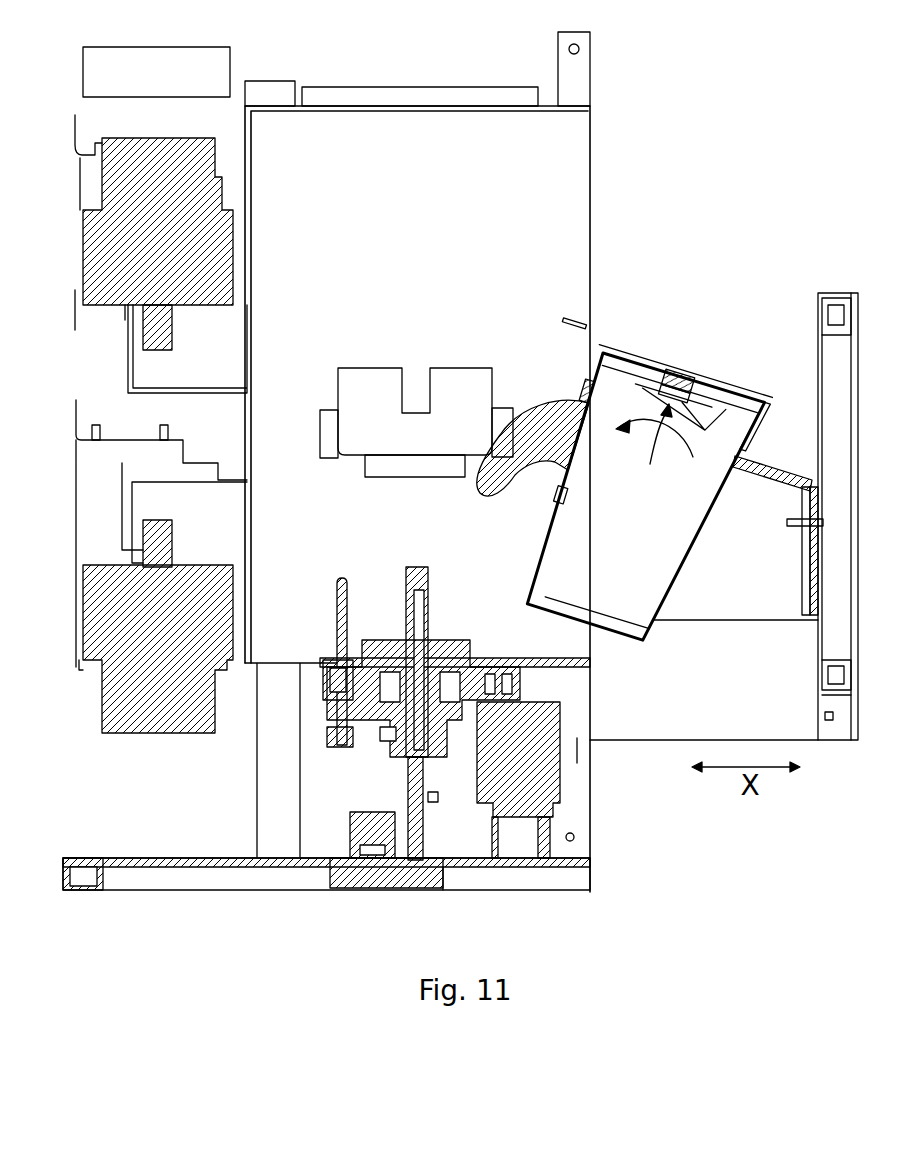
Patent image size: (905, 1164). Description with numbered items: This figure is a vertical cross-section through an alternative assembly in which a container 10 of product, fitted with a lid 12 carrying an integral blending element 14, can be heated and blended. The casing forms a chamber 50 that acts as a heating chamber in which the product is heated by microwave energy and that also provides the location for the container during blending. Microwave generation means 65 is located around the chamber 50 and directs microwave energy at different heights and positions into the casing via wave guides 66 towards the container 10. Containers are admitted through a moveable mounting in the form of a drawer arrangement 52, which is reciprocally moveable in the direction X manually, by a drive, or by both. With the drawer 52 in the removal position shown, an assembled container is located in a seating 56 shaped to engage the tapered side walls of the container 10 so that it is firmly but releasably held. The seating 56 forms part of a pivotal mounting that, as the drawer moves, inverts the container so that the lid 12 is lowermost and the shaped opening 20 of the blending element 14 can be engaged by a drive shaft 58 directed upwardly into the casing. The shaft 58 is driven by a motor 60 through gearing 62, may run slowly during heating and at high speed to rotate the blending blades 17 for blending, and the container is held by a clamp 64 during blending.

The container 10 is at (643, 641).
The lid 12 is at (721, 383).
The blending element 14 is at (654, 449).
The blending blades 17 is at (713, 413).
The shaped opening 20 is at (682, 370).
The chamber 50 is at (593, 203).
The drawer arrangement 52 is at (684, 725).
The seating 56 is at (773, 487).
The drive shaft 58 is at (406, 603).
The motor 60 is at (533, 773).
The gearing 62 is at (479, 658).
The clamp 64 is at (337, 606).
The microwave generation means 65 is at (112, 262).
The wave guides 66 is at (127, 378).